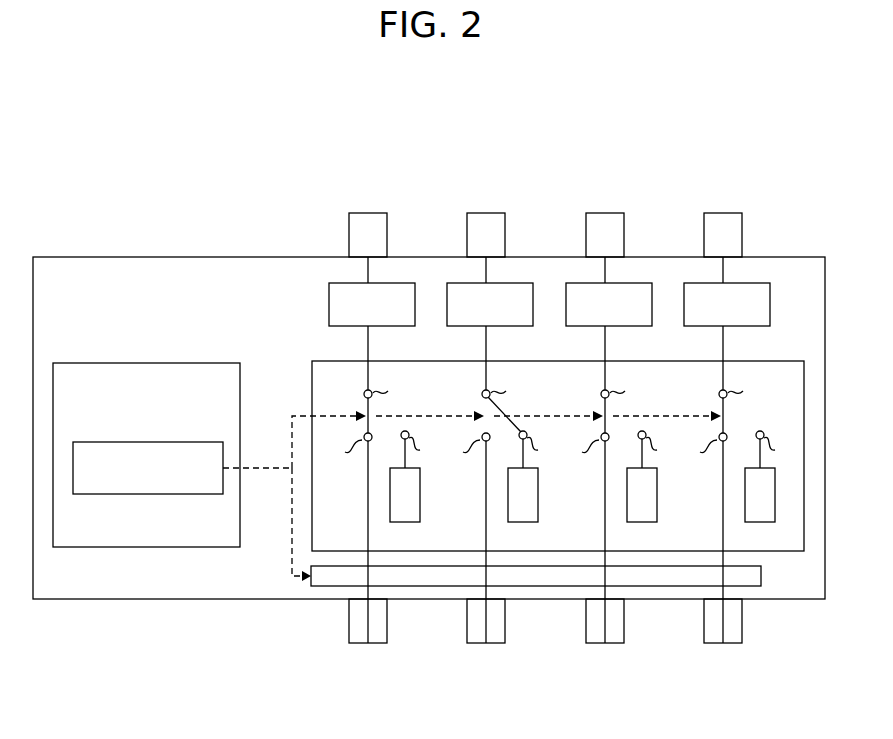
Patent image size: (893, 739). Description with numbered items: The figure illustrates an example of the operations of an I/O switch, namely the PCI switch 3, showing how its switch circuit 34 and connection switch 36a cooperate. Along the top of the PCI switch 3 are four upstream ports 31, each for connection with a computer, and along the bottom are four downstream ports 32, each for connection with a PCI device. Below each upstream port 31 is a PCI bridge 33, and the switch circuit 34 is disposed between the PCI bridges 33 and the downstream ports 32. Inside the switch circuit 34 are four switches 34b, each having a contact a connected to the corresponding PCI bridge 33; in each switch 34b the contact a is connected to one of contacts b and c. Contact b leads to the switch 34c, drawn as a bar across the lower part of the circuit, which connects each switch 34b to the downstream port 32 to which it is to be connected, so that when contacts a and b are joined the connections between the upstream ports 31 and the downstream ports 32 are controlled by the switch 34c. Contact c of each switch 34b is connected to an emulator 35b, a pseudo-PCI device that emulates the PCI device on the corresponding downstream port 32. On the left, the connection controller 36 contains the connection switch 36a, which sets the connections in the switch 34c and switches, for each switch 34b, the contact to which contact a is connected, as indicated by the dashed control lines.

The PCI switch 3 is at (185, 257).
The upstream port 31 is at (368, 212).
The downstream port 32 is at (368, 643).
The PCI bridge 33 is at (385, 326).
The switch circuit 34 is at (312, 373).
The switch 34b is at (361, 396).
The switch 34c is at (309, 587).
The emulator 35b is at (408, 522).
The connection controller 36 is at (150, 363).
The connection switch 36a is at (152, 494).